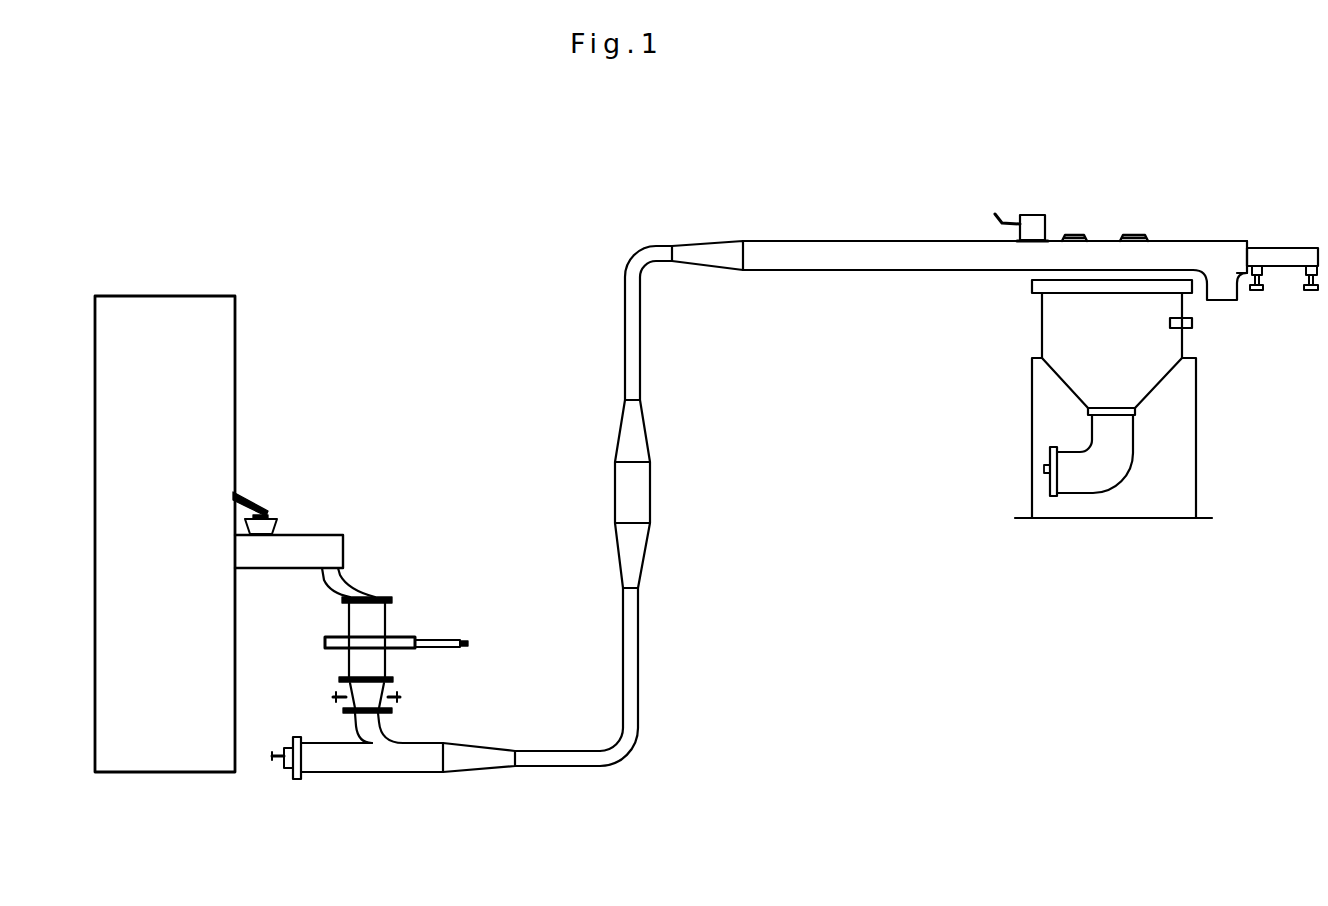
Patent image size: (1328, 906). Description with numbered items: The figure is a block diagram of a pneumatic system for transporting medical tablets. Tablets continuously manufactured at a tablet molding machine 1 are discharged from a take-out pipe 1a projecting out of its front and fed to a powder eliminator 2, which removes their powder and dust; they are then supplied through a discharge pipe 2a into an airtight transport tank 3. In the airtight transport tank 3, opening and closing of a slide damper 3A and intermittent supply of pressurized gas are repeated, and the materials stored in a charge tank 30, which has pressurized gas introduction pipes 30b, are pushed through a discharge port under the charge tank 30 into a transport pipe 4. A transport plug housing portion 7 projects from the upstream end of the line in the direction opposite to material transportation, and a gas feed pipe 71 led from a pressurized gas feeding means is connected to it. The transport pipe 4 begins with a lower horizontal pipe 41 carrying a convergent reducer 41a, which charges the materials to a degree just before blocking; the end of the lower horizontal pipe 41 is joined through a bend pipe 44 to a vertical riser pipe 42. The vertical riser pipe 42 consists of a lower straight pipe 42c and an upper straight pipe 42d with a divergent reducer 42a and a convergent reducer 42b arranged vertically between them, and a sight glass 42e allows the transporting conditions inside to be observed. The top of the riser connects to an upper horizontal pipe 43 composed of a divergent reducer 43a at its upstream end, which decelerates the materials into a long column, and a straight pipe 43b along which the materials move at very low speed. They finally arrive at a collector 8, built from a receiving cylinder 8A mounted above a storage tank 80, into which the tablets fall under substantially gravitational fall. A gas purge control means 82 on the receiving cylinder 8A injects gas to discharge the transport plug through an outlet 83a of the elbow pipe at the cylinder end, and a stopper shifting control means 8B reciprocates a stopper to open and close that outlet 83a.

The tablet molding machine 1 is at (228, 343).
The take-out pipe 1a is at (257, 513).
The powder eliminator 2 is at (334, 542).
The discharge pipe 2a is at (357, 585).
The airtight transport tank 3 is at (324, 643).
The slide damper 3A is at (434, 636).
The charge tank 30 is at (385, 697).
The pressurized gas introduction pipe 30b is at (336, 697).
The transport plug housing portion 7 is at (345, 764).
The gas feed pipe 71 is at (278, 766).
The transport pipe 4 is at (571, 216).
The lower horizontal pipe 41 is at (562, 768).
The convergent reducer 41a is at (463, 757).
The bend pipe 44 is at (628, 755).
The vertical riser pipe 42 is at (635, 494).
The divergent reducer 42a is at (640, 553).
The convergent reducer 42b is at (638, 428).
The straight pipe 42c is at (640, 667).
The straight pipe 42d is at (628, 313).
The sight glass 42e is at (620, 489).
The upper horizontal pipe 43 is at (833, 216).
The divergent reducer 43a is at (707, 250).
The straight pipe 43b is at (890, 250).
The collector 8 is at (1163, 188).
The receiving cylinder 8A is at (1098, 256).
The stopper shifting control means 8B is at (1272, 256).
The gas purge control means 82 is at (1031, 218).
The outlet 83a is at (1220, 302).
The storage tank 80 is at (1173, 348).